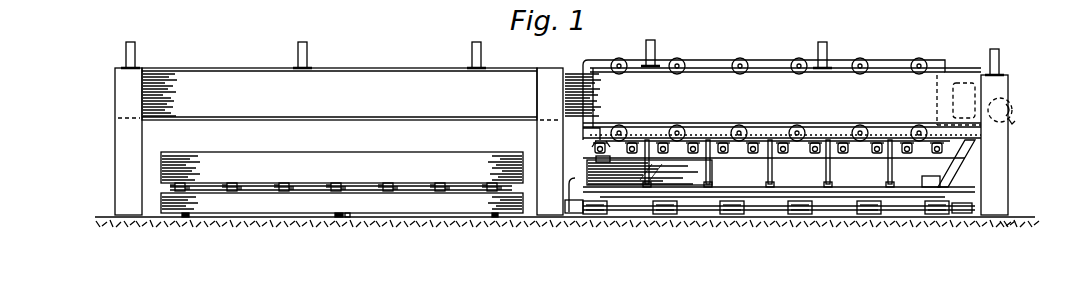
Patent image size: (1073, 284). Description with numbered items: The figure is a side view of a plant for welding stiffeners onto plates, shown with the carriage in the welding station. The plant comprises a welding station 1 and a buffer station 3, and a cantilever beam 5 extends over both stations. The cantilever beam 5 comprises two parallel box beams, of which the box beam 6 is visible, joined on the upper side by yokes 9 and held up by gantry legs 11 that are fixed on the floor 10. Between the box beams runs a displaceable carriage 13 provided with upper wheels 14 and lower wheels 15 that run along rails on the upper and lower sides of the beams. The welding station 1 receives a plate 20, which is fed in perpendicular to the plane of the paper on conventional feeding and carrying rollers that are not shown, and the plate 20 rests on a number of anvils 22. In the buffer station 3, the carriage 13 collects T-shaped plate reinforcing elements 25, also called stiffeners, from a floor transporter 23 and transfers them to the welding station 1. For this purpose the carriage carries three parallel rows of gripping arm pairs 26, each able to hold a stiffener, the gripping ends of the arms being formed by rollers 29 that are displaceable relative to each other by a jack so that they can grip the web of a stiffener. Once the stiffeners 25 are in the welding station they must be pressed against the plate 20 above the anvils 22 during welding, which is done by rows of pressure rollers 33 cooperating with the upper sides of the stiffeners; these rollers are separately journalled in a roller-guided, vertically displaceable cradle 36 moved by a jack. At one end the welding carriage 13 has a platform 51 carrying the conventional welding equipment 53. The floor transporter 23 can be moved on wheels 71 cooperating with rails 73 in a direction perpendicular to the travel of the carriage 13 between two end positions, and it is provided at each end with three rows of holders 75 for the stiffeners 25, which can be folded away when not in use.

The welding station 1 is at (770, 45).
The buffer station 3 is at (373, 53).
The cantilever beam 5 is at (350, 103).
The box beam 6 is at (500, 82).
The yokes 9 is at (136, 52).
The floor 10 is at (185, 218).
The gantry legs 11 is at (128, 215).
The carriage 13 is at (603, 61).
The upper wheels 14 is at (678, 57).
The lower wheels 15 is at (738, 141).
The plate 20 is at (578, 180).
The anvils 22 is at (900, 193).
The floor transporter 23 is at (243, 203).
The plate reinforcing elements 25 is at (463, 173).
The gripping arm pairs 26 is at (778, 172).
The rollers 29 is at (768, 157).
The pressure rollers 33 is at (603, 163).
The cradle 36 is at (607, 142).
The platform 51 is at (1015, 131).
The welding equipment 53 is at (964, 155).
The wheels 71 is at (348, 218).
The rails 73 is at (338, 217).
The holders 75 is at (330, 193).